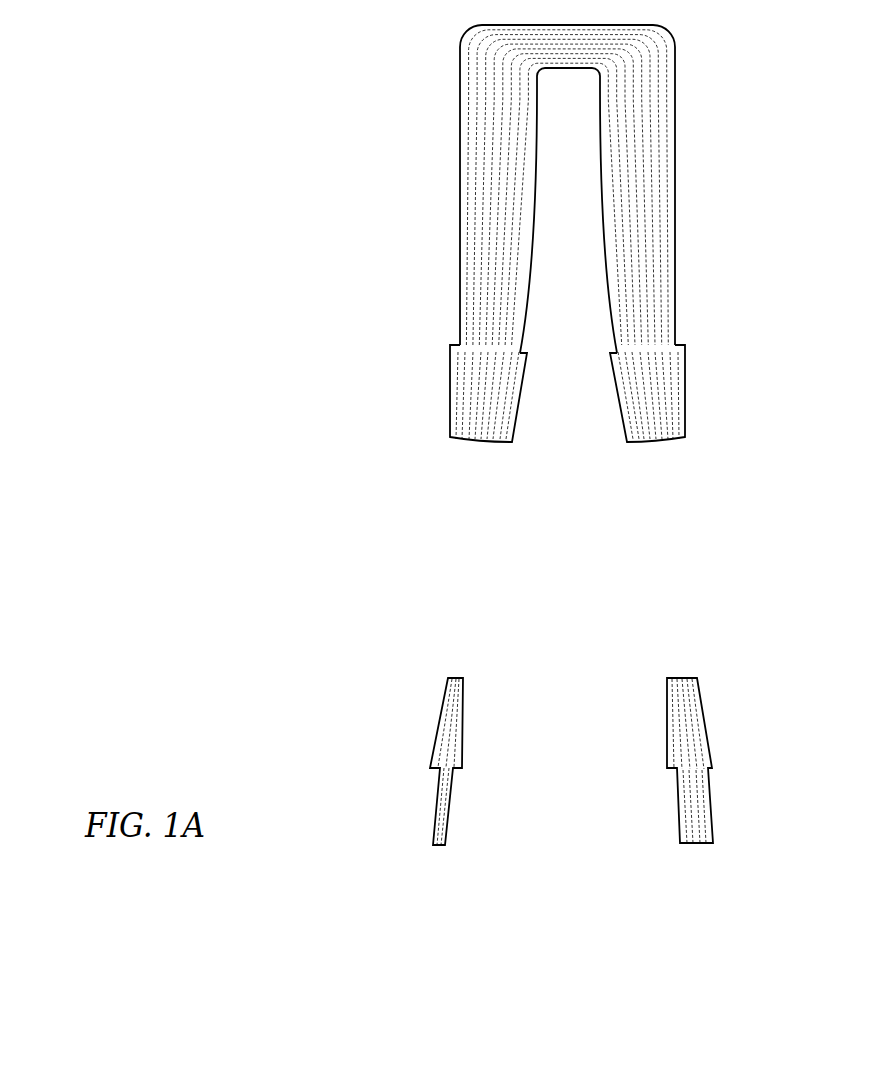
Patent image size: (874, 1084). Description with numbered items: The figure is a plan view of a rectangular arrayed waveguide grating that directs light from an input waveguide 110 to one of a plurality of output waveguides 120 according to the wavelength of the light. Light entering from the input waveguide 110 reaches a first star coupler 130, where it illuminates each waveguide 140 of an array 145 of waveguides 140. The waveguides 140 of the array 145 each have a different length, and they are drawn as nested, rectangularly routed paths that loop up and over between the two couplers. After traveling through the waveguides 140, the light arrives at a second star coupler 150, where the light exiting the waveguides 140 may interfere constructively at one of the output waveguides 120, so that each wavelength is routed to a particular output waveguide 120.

The input waveguide 110 is at (433, 823).
The output waveguides 120 is at (715, 813).
The first star coupler 130 is at (429, 342).
The waveguide 140 is at (772, 307).
The array 145 is at (661, 189).
The second star coupler 150 is at (712, 342).